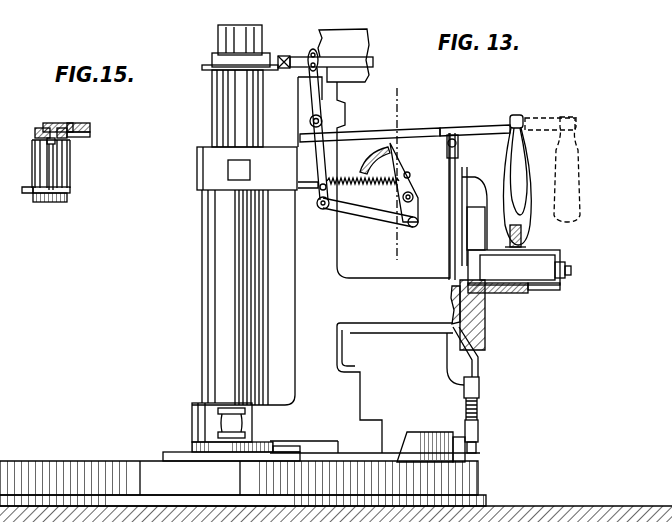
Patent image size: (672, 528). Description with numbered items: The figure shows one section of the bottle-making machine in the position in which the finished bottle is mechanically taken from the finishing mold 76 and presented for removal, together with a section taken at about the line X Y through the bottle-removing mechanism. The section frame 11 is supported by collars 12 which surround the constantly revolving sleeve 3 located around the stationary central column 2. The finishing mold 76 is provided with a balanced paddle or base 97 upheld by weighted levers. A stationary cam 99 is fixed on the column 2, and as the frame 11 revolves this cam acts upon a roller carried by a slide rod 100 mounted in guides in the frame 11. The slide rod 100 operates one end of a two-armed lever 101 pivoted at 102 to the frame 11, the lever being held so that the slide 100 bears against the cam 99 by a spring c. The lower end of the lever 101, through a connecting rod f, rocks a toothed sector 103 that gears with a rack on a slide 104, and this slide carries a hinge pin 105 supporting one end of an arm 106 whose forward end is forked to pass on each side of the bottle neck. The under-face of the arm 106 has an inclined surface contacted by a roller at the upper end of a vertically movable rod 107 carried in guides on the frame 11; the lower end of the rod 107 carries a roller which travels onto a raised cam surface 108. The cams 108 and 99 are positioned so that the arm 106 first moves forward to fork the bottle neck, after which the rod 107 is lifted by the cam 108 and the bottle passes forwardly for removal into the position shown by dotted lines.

In FIG. 13, the central column 2 is at (225, 44).
In FIG. 13, the sleeve 3 is at (215, 296).
In FIG. 13, the frame 11 is at (308, 237).
In FIG. 13, the collars 12 is at (205, 169).
In FIG. 13, the finishing mold 76 is at (535, 224).
In FIG. 13, the balanced paddle or base 97 is at (522, 240).
In FIG. 13, the stationary cam 99 is at (271, 66).
In FIG. 13, the slide rod 100 is at (372, 63).
In FIG. 13, the two-armed lever 101 is at (320, 98).
In FIG. 13, the pivot 102 is at (305, 126).
In FIG. 15, the toothed sector 103 is at (50, 203).
In FIG. 13, the toothed sector 103 is at (398, 132).
In FIG. 15, the slide 104 is at (52, 128).
In FIG. 15, the hinge pin 105 is at (82, 130).
In FIG. 13, the arm 106 is at (462, 128).
In FIG. 13, the vertically movable rod 107 is at (453, 158).
In FIG. 13, the raised cam surface 108 is at (473, 459).
In FIG. 13, the section line X is at (395, 174).
In FIG. 13, the section line Y is at (394, 250).
In FIG. 13, the spring c is at (372, 185).
In FIG. 13, the connecting rod f is at (333, 210).